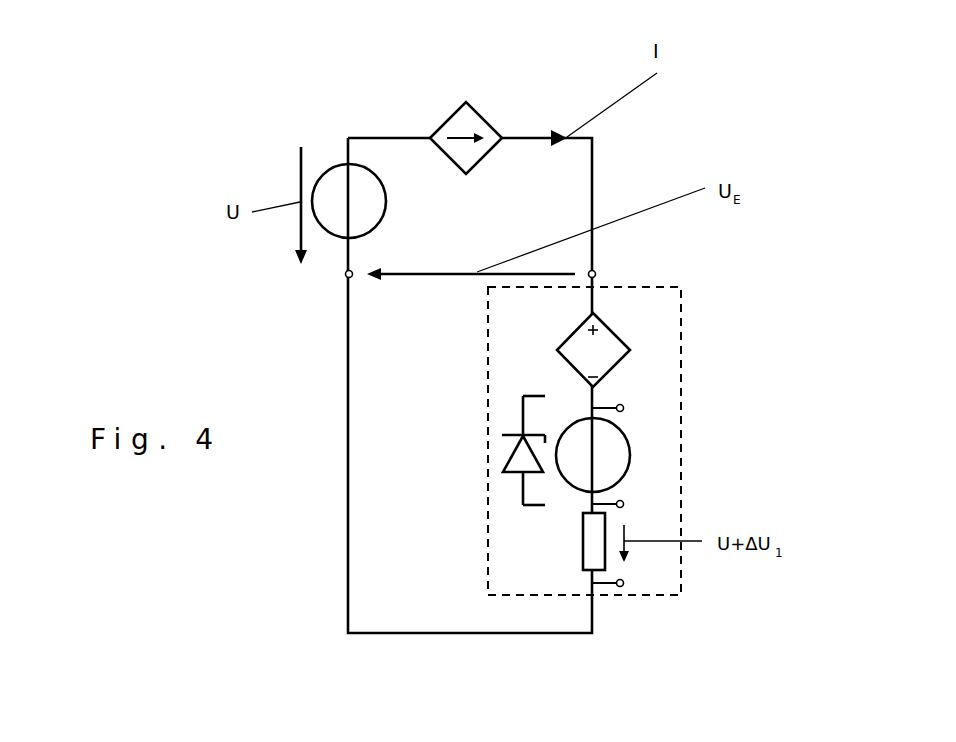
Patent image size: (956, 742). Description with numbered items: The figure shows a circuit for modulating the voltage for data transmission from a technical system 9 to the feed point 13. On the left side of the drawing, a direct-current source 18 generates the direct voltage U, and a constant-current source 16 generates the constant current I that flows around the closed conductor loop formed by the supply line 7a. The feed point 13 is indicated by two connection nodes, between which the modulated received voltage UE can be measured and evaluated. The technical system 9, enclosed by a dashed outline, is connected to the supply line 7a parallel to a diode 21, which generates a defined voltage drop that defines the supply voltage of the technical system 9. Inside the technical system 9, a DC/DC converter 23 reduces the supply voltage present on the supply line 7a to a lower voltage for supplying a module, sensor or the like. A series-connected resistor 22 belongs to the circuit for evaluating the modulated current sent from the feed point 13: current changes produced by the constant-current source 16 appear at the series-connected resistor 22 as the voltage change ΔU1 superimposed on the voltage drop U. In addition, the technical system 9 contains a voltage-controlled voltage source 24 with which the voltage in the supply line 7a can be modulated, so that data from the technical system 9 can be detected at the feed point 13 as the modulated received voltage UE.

The supply line 7a is at (347, 600).
The direct-current source 18 is at (323, 167).
The constant-current source 16 is at (483, 118).
The feed point 13 is at (345, 278).
The technical system 9 is at (682, 303).
The voltage-controlled voltage source 24 is at (612, 369).
The DC/DC converter 23 is at (630, 453).
The series-connected resistor 22 is at (605, 566).
The diode 21 is at (513, 450).